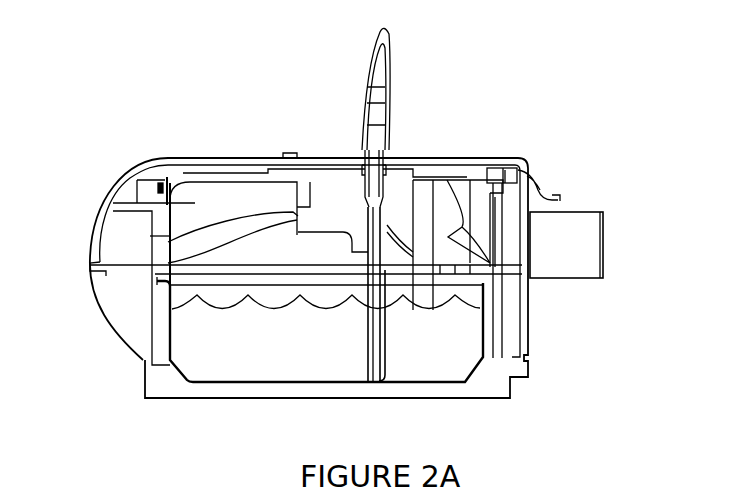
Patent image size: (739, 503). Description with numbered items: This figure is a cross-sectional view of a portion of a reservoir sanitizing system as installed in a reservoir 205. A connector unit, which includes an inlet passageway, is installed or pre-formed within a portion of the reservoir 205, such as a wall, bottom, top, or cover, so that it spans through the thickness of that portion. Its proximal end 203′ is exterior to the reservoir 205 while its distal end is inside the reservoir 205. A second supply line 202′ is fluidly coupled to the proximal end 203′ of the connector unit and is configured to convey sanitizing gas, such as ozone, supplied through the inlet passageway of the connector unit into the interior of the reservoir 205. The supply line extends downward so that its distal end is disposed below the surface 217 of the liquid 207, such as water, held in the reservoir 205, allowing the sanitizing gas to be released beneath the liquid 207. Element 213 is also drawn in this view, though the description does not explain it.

The second supply line 202′ is at (388, 90).
The proximal end of connector unit 203′ is at (388, 140).
The reservoir 205 is at (171, 191).
The surface of liquid 217 is at (220, 306).
The liquid 207 is at (208, 348).
The lower tube 213 is at (368, 356).